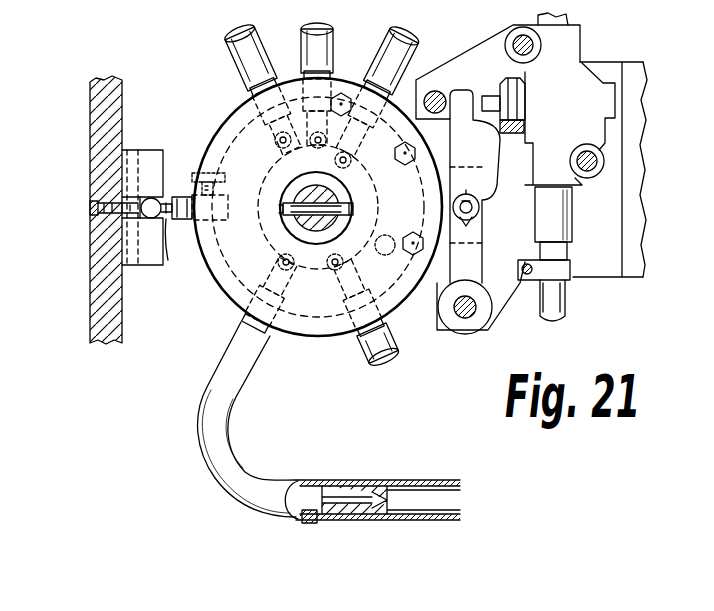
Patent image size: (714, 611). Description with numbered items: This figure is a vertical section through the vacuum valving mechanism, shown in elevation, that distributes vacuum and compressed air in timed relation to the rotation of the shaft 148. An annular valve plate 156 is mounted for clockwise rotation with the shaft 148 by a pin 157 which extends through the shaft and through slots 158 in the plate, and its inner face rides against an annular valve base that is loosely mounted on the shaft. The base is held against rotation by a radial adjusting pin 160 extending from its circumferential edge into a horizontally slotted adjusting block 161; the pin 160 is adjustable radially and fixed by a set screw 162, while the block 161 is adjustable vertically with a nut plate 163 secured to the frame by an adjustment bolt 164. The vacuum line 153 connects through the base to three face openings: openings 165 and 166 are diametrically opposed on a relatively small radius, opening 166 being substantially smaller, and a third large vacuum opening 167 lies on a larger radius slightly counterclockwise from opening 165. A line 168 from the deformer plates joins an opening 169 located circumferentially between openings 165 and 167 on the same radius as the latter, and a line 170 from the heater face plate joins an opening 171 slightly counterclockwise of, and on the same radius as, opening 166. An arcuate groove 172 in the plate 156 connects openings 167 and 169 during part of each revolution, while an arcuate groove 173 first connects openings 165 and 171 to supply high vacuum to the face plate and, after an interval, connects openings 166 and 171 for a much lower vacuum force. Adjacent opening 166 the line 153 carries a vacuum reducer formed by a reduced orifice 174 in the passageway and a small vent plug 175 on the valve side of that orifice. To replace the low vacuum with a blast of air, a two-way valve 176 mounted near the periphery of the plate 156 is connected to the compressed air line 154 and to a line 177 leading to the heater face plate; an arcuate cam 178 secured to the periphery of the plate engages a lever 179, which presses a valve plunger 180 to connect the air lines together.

The shaft 148 is at (303, 218).
The vacuum line 153 is at (228, 62).
The compressed air line 154 is at (572, 312).
The annular valve plate 156 is at (228, 306).
The pin 157 is at (339, 206).
The slots 158 is at (348, 213).
The radial adjusting pin 160 is at (170, 246).
The adjusting block 161 is at (155, 158).
The set screw 162 is at (200, 184).
The nut plate 163 is at (110, 228).
The adjustment bolt 164 is at (93, 206).
The vacuum opening 165 is at (348, 166).
The vacuum opening 166 is at (278, 265).
The vacuum opening 167 is at (274, 138).
The line from deformer plates 168 is at (297, 36).
The opening 169 is at (318, 150).
The line from heater face plate 170 is at (376, 372).
The opening 171 is at (333, 272).
The arcuate groove 172 is at (376, 242).
The arcuate groove 173 is at (258, 181).
The reduced orifice 174 is at (372, 502).
The vent plug 175 is at (305, 525).
The two-way valve 176 is at (608, 70).
The line 177 is at (570, 18).
The arcuate cam 178 is at (400, 72).
The lever 179 is at (478, 242).
The valve plunger 180 is at (500, 96).